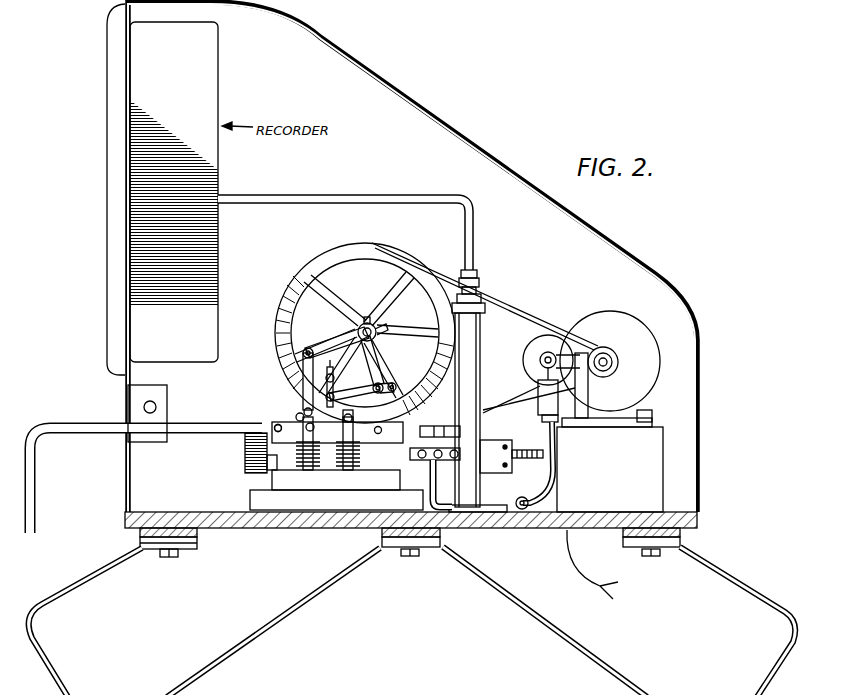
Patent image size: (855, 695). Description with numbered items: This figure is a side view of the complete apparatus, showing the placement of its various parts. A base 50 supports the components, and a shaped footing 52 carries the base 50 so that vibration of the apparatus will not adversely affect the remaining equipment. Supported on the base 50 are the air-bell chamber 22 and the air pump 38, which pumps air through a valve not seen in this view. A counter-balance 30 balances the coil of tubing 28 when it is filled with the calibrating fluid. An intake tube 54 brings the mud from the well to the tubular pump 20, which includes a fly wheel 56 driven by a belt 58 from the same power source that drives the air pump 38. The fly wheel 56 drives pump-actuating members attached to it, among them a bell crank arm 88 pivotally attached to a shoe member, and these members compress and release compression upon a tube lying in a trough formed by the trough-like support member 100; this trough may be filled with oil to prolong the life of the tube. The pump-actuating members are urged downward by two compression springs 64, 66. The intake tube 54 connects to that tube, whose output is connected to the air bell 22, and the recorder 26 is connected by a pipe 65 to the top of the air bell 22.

The tubular pump 20 is at (283, 400).
The air-bell chamber 22 is at (480, 352).
The recorder 26 is at (222, 68).
The coil of tubing 28 is at (245, 458).
The counter-balance 30 is at (493, 455).
The air pump 38 is at (605, 317).
The base 50 is at (700, 518).
The shaped footing 52 is at (583, 650).
The intake tube 54 is at (72, 425).
The fly wheel 56 is at (368, 248).
The belt 58 is at (508, 302).
The compression spring 64 is at (322, 463).
The pipe 65 is at (307, 193).
The compression spring 66 is at (357, 463).
The bell crank arm 88 is at (337, 340).
The trough-like member 100 is at (278, 422).